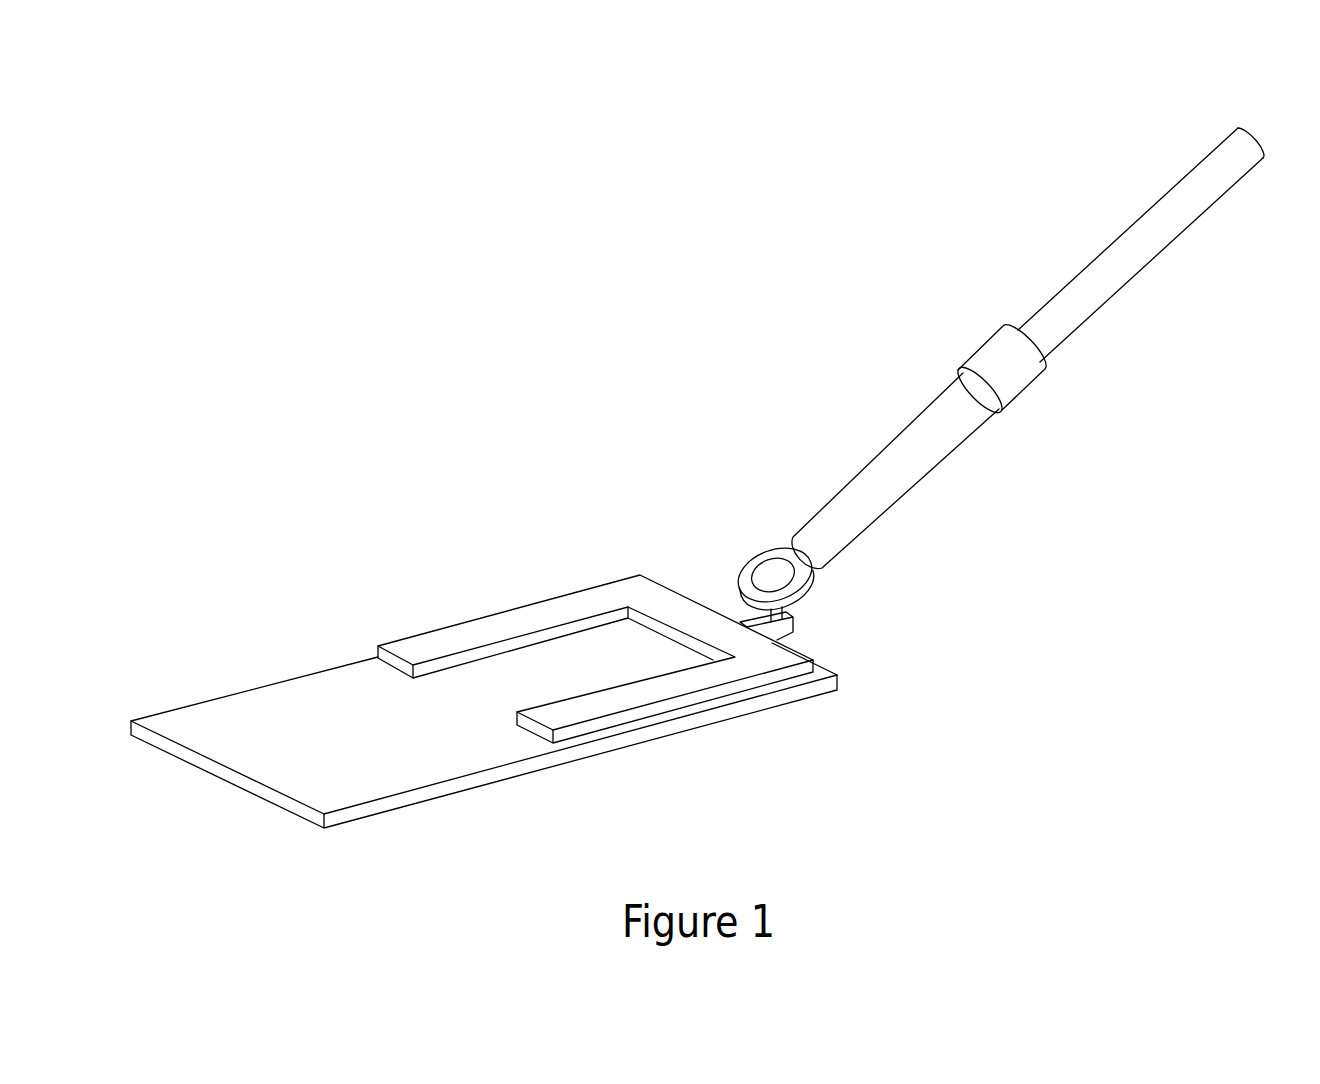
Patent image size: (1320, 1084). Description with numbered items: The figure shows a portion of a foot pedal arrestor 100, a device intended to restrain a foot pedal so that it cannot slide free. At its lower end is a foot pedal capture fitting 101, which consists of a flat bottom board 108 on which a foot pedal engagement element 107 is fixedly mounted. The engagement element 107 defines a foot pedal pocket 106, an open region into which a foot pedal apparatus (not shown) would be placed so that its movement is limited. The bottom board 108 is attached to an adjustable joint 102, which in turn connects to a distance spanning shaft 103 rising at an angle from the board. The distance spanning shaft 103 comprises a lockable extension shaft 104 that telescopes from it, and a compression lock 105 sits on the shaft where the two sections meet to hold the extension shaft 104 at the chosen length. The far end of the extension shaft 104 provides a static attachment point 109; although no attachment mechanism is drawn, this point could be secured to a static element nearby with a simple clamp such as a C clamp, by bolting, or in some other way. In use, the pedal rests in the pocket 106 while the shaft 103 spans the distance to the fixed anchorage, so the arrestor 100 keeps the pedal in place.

The foot pedal arrestor 100 is at (431, 305).
The foot pedal capture fitting 101 is at (790, 764).
The adjustable joint 102 is at (829, 607).
The distance spanning shaft 103 is at (968, 494).
The lockable extension shaft 104 is at (1115, 270).
The compression lock 105 is at (998, 353).
The foot pedal pocket 106 is at (548, 668).
The foot pedal engagement element 107 is at (590, 597).
The bottom board 108 is at (343, 723).
The static attachment point 109 is at (1240, 143).